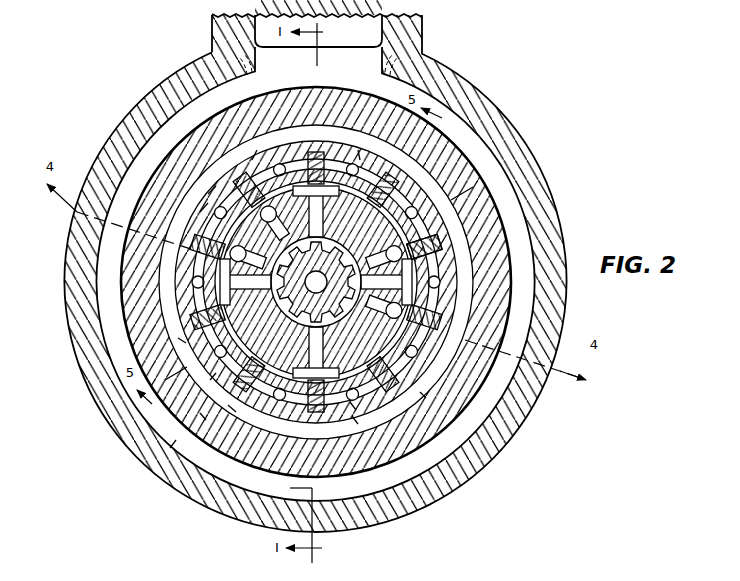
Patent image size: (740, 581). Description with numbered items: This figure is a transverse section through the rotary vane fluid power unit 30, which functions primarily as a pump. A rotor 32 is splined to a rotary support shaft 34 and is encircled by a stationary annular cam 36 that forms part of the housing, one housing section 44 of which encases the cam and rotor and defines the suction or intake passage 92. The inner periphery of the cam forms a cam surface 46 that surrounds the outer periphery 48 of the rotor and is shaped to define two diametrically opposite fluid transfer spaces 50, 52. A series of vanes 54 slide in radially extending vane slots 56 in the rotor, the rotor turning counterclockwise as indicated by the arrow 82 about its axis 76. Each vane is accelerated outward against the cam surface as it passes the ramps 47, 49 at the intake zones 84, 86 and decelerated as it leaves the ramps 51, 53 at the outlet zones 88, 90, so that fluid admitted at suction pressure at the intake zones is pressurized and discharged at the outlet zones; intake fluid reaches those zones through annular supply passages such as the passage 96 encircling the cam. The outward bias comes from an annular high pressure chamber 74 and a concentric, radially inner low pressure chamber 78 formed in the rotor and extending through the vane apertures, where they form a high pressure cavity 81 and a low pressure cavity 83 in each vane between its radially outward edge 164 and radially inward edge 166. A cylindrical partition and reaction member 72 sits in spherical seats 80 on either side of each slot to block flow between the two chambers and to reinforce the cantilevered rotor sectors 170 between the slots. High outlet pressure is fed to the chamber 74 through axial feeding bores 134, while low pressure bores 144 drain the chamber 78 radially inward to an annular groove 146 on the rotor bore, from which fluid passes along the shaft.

The rotary vane fluid power unit 30 is at (514, 450).
The rotor 32 is at (258, 150).
The rotary support shaft 34 is at (298, 279).
The annular cam 36 is at (382, 453).
The housing section 44 is at (410, 512).
The cam surface 46 is at (414, 361).
The ramp 47 is at (217, 187).
The outer periphery of the rotor 48 is at (357, 411).
The ramp 49 is at (427, 399).
The fluid transfer space 50 is at (170, 290).
The ramp 51 is at (201, 414).
The fluid transfer space 52 is at (468, 300).
The ramp 53 is at (446, 205).
The vane 54 is at (459, 238).
The vane slot 56 is at (262, 180).
The partition and reaction member 72 is at (195, 252).
The annular high pressure chamber 74 is at (244, 194).
The axis of the rotor 76 is at (319, 274).
The annular low pressure chamber 78 is at (404, 194).
The seat 80 is at (187, 343).
The high pressure cavity 81 is at (441, 255).
The arrow 82 is at (318, 300).
The low pressure cavity 83 is at (428, 283).
The intake zone 84 is at (209, 204).
The intake zone 86 is at (440, 369).
The outlet zone 88 is at (217, 374).
The outlet zone 90 is at (443, 207).
The intake passage 92 is at (383, 34).
The annular fluid supply passage 96 is at (177, 441).
The fluid pressure feeding bore 134 is at (359, 151).
The low pressure bore 144 is at (356, 312).
The annular groove 146 is at (308, 330).
The radially outward edge of the vane 164 is at (182, 330).
The radially inward edge of the vane 166 is at (300, 228).
The rotor sector 170 is at (229, 406).